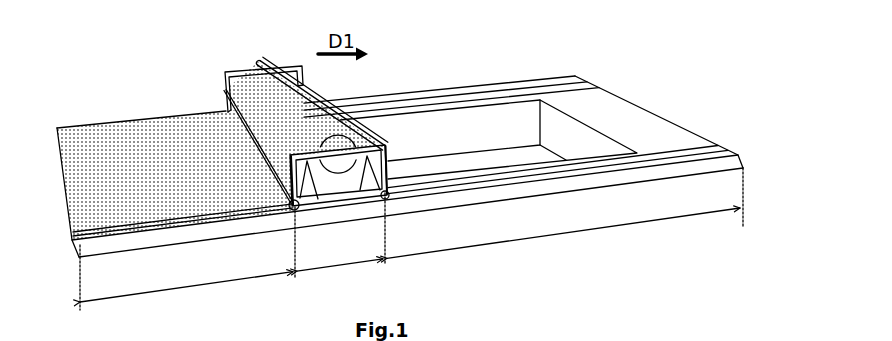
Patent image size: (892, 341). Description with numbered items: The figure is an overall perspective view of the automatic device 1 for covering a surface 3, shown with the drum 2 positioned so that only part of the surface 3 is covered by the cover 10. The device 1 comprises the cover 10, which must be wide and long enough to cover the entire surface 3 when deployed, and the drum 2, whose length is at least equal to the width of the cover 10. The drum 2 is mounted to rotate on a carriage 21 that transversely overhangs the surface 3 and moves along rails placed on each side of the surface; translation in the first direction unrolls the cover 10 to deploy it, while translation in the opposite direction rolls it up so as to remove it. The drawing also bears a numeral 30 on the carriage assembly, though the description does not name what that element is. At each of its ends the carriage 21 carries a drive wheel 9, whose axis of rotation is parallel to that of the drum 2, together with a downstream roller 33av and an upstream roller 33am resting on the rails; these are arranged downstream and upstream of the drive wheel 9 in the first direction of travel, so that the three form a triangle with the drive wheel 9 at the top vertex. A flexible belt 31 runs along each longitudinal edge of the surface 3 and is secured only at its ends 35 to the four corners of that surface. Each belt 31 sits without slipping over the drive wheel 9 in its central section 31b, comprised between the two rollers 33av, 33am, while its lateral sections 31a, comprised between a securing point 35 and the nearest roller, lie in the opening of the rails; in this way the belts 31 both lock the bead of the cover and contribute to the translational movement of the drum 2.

The automatic device 1 is at (620, 65).
The drum 2 is at (301, 91).
The surface 3 is at (525, 112).
The drive wheel 9 is at (361, 100).
The cover 10 is at (110, 203).
The carriage 21 is at (223, 78).
The rod / bar 30 is at (260, 61).
The belt 31 is at (147, 236).
The lateral section 31a is at (411, 239).
The central section 31b is at (340, 235).
The upstream roller 33am is at (392, 176).
The downstream roller 33av is at (290, 208).
The securing point 35 is at (72, 238).